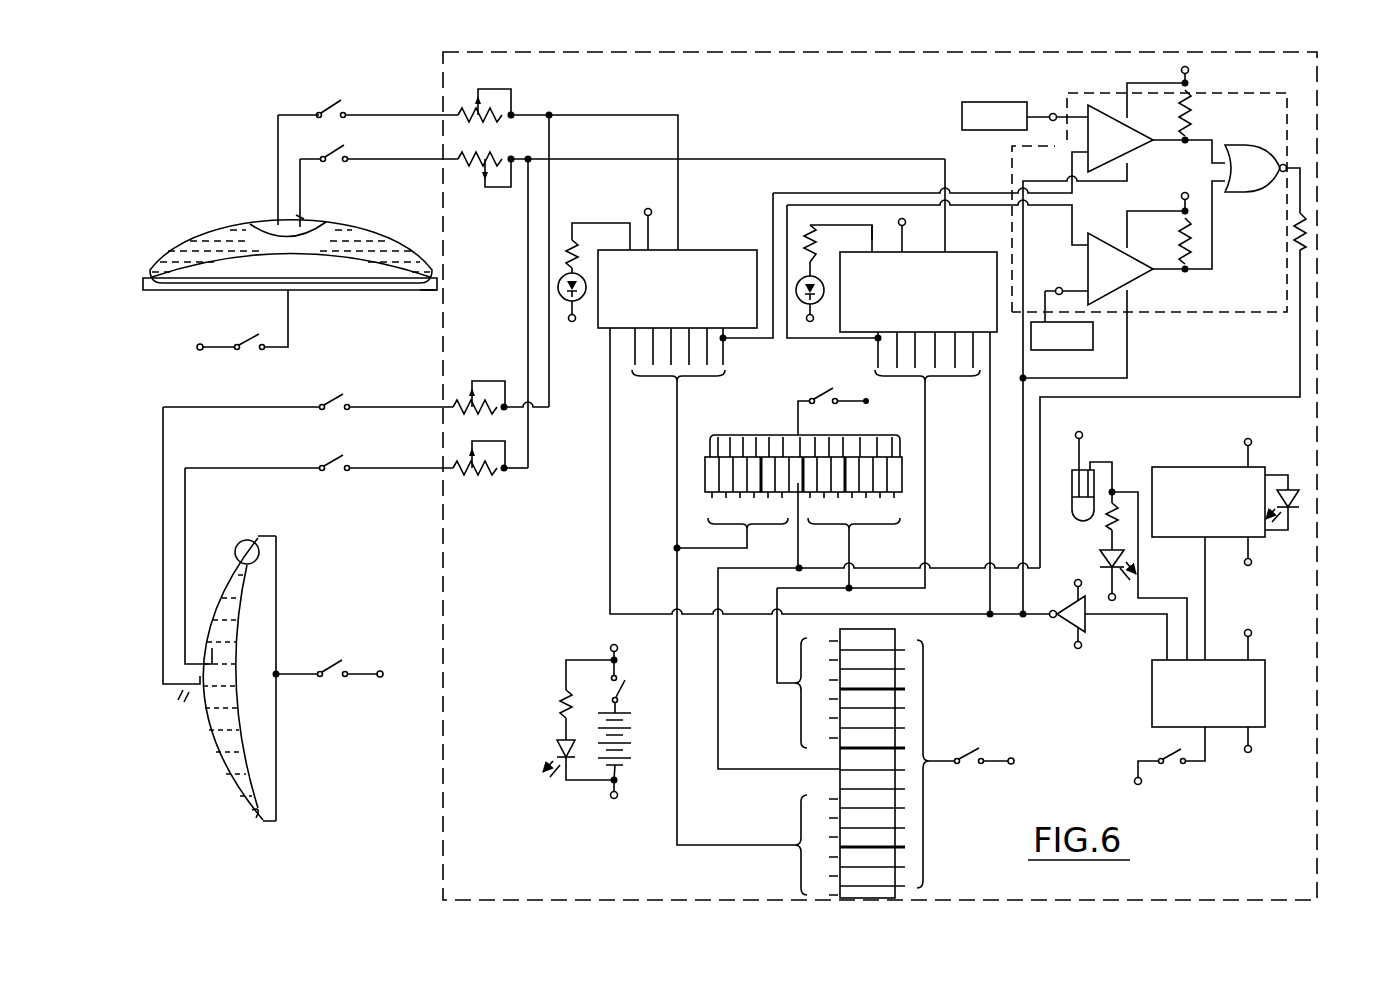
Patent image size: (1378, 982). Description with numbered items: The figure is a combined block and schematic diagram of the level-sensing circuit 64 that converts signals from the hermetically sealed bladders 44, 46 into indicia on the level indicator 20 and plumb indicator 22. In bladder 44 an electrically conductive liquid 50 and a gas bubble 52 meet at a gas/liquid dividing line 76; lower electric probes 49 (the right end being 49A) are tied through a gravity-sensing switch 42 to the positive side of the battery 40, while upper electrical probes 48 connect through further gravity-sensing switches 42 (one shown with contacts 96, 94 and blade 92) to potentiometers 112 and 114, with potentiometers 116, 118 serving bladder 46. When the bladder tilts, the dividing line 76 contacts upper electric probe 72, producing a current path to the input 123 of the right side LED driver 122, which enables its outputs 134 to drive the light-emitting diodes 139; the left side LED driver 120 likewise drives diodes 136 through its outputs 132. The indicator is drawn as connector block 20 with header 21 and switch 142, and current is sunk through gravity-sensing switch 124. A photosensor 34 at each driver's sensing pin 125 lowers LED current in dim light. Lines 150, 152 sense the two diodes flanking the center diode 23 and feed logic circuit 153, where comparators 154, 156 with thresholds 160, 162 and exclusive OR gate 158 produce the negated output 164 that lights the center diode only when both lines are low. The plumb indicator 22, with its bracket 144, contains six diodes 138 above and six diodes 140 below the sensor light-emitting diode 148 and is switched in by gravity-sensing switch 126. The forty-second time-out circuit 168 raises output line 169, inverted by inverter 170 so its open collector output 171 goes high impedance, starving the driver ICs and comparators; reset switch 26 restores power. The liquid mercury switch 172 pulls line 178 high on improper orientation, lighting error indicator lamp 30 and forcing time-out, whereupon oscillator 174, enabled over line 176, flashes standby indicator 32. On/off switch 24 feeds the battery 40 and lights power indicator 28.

The level indicator 20 is at (718, 421).
The connector header 21 is at (706, 457).
The plumb indicator 22 is at (947, 816).
The center diode 23 is at (799, 487).
The on/off switch 24 is at (619, 694).
The switch 26 is at (1176, 762).
The power indicator 28 is at (557, 748).
The error indicator lamp 30 is at (1100, 556).
The standby indicator 32 is at (1302, 497).
The photosensor 34 is at (580, 270).
The battery 40 is at (640, 733).
The gravity-sensing switch 42 is at (300, 108).
The hermetically sealed bladder 44 is at (229, 213).
The hermetically sealed bladder 46 is at (229, 790).
The upper electrical probes 48 is at (278, 158).
The lower electric probes 49 is at (152, 293).
The base edge 49A is at (428, 294).
The electrically conductive liquid 50 is at (392, 243).
The gas bubble 52 is at (296, 223).
The level-sensing circuit 64 is at (1319, 281).
The upper electric probe 72 is at (304, 214).
The gas/liquid dividing line 76 is at (310, 240).
The switch blade 92 is at (331, 110).
The switch contact 94 is at (347, 113).
The switch contact 96 is at (319, 112).
The potentiometer 112 is at (519, 104).
The potentiometer 114 is at (472, 183).
The potentiometer 116 is at (498, 378).
The potentiometer 118 is at (483, 478).
The left side LED driver 120 is at (705, 250).
The right side LED driver 122 is at (975, 252).
The input 123 is at (945, 243).
The gravity-sensing switch 124 is at (824, 399).
The sensing pin 125 is at (880, 232).
The gravity-sensing switch 126 is at (967, 758).
The left driver outputs 132 is at (670, 387).
The outputs 134 is at (934, 384).
The light-emitting diodes 136 is at (735, 528).
The light-emitting diodes 138 is at (796, 696).
The light-emitting diodes 139 is at (868, 521).
The light-emitting diodes 140 is at (796, 856).
The switch S1 N.C. 142 is at (786, 420).
The connector bracket 144 is at (943, 708).
The sensor light-emitting diode 148 is at (843, 772).
The line 150 is at (891, 192).
The line 152 is at (931, 204).
The logic circuit 153 is at (1220, 313).
The comparator 154 is at (1132, 128).
The comparator 156 is at (1142, 275).
The exclusive OR gate 158 is at (1266, 140).
The voltage reference threshold 160 is at (1018, 102).
The voltage reference threshold 162 is at (1065, 350).
The output 164 is at (1300, 172).
The forty-second time-out circuit 168 is at (1265, 676).
The output line 169 is at (1166, 634).
The inverter 170 is at (1057, 627).
The open collector output 171 is at (1031, 621).
The liquid mercury switch 172 is at (1082, 470).
The oscillator 174 is at (1210, 467).
The line 176 is at (1210, 606).
The line 178 is at (1158, 598).